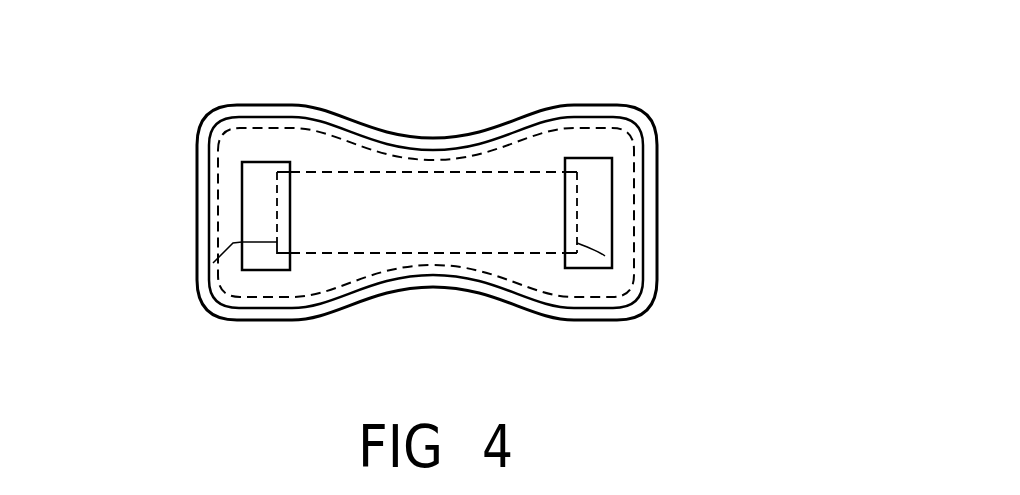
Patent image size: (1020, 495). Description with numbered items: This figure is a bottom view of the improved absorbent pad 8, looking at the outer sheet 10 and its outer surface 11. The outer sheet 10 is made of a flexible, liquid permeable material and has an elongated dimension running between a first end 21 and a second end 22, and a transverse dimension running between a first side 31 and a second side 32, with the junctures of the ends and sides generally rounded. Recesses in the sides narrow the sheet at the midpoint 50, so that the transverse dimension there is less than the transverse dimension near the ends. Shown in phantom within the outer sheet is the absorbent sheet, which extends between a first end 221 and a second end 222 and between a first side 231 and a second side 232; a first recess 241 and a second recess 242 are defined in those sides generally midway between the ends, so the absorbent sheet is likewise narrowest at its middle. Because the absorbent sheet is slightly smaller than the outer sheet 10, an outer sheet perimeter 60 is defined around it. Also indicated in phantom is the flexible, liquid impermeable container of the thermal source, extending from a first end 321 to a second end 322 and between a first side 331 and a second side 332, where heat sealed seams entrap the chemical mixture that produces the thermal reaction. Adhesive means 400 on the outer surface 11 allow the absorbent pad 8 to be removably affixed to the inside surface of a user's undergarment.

The improved absorbent pad 8 is at (695, 293).
The outer sheet 10 is at (522, 308).
The outer surface 11 is at (337, 267).
The first end 21 is at (197, 243).
The second end 22 is at (660, 220).
The first side 31 is at (248, 320).
The second side 32 is at (297, 106).
The midpoint 50 is at (422, 110).
The outer sheet perimeter 60 is at (660, 184).
The first end 221 is at (217, 189).
The second end 222 is at (638, 240).
The first side 231 is at (280, 297).
The second side 232 is at (312, 128).
The first recess 241 is at (427, 263).
The second recess 242 is at (447, 160).
The first end 321 is at (200, 290).
The second end 322 is at (612, 262).
The first side 331 is at (553, 288).
The second side 332 is at (350, 170).
The adhesive means 400 is at (243, 170).